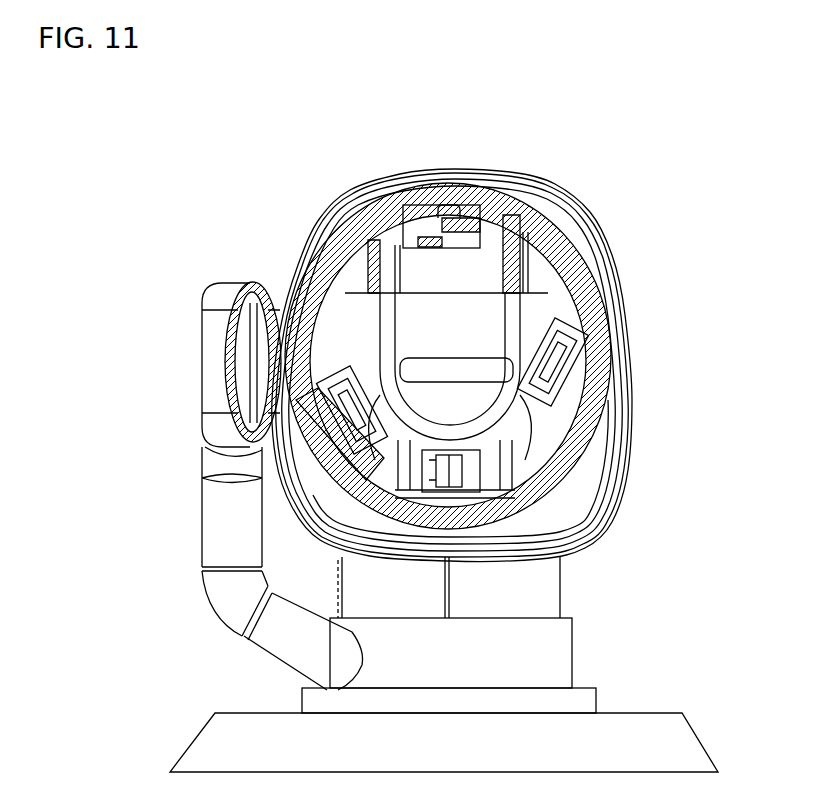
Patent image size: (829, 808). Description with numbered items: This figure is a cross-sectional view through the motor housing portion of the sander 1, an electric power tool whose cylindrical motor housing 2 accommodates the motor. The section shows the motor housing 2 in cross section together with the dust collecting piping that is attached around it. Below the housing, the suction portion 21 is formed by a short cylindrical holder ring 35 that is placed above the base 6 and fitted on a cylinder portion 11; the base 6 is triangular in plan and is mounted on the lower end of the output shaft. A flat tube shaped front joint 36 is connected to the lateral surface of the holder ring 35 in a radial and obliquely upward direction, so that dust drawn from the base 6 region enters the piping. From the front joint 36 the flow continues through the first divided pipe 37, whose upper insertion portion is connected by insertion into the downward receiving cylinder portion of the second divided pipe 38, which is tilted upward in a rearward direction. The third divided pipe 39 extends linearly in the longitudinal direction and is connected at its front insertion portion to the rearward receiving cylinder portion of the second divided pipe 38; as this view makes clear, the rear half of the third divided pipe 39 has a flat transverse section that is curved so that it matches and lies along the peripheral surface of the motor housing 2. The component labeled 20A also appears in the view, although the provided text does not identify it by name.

The sander 1 is at (564, 150).
The motor housing 2 is at (615, 297).
The handle 20A is at (206, 276).
The third divided pipe 39 is at (278, 276).
The second divided pipe 38 is at (213, 458).
The first divided pipe 37 is at (225, 606).
The front joint 36 is at (283, 648).
The cylinder portion 11 is at (545, 592).
The suction portion 21 is at (575, 627).
The holder ring 35 is at (560, 667).
The base 6 is at (664, 728).